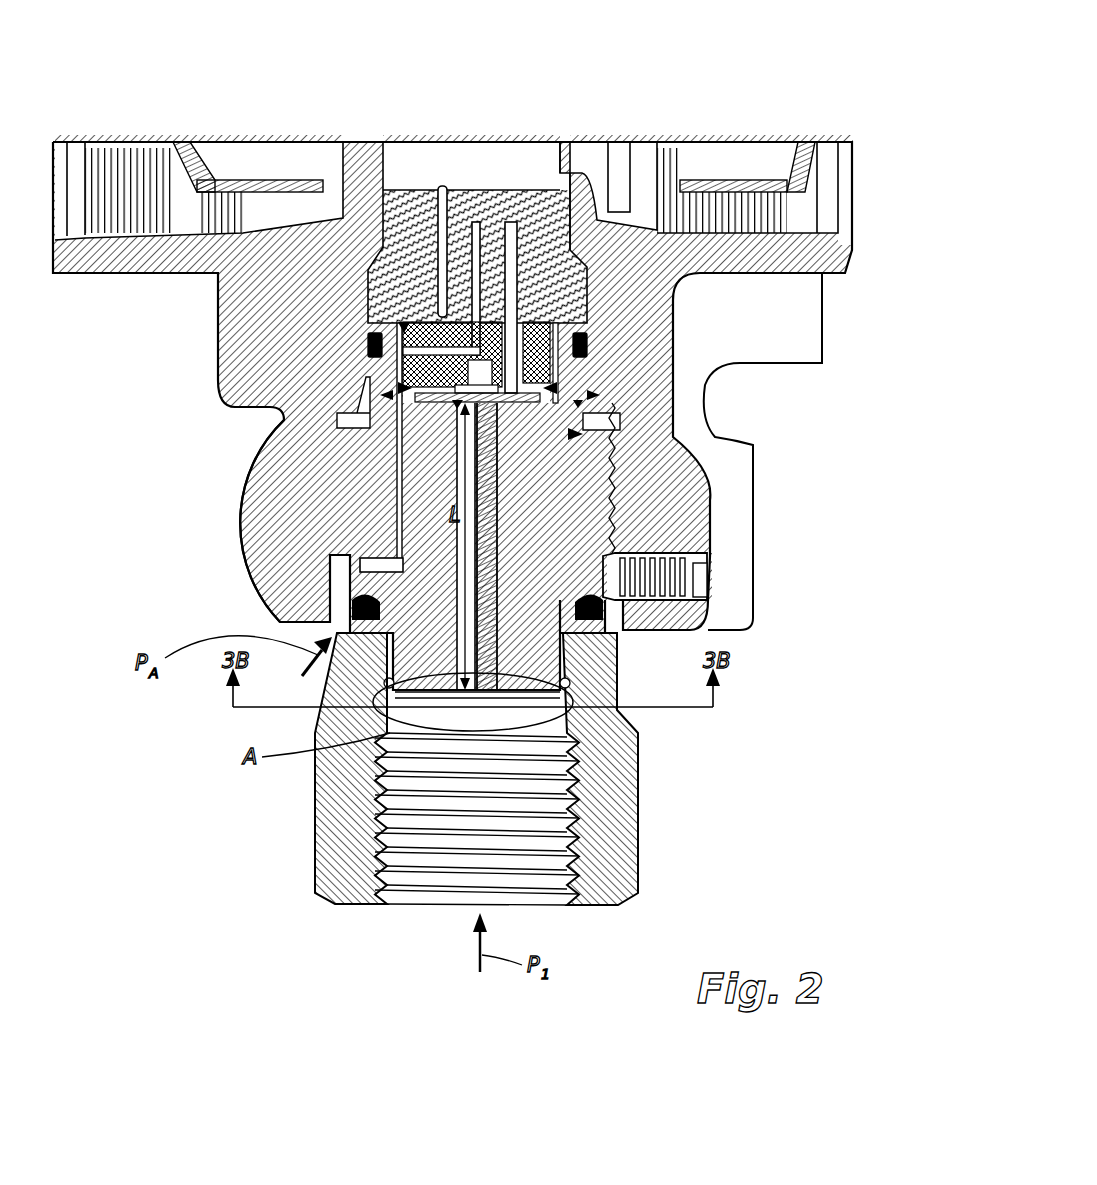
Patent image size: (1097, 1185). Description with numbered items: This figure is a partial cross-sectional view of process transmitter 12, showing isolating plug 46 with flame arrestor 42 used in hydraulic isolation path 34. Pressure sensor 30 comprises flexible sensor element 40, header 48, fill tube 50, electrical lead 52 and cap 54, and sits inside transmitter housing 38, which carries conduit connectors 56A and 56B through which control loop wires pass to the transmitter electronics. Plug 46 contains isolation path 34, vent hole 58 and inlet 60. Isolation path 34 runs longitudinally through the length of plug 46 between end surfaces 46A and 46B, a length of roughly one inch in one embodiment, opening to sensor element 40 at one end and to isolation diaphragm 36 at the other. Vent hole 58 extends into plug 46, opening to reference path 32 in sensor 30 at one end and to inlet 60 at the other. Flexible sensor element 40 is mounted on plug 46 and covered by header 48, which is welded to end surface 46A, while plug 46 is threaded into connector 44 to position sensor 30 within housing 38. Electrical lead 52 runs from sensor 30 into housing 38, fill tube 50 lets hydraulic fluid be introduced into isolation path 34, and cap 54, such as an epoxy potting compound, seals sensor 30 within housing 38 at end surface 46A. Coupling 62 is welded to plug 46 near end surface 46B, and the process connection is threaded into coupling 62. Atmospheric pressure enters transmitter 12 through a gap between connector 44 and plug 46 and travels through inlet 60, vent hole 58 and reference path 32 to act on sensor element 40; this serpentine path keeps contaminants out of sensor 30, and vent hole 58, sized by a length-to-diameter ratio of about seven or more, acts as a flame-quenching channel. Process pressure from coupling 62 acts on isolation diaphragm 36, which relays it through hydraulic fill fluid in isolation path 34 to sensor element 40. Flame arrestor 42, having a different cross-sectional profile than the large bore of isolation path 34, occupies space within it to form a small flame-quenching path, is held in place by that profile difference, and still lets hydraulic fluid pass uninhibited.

The process transmitter 12 is at (688, 108).
The pressure sensor 30 is at (349, 323).
The reference path 32 is at (404, 322).
The isolation path 34 is at (480, 547).
The isolation diaphragm 36 is at (630, 735).
The transmitter housing 38 is at (690, 388).
The flexible sensor element 40 is at (368, 347).
The flame arrestor 42 is at (500, 466).
The connector 44 is at (278, 575).
The isolating plug 46 is at (552, 525).
The end surface 46A is at (583, 432).
The end surface 46B is at (575, 650).
The header 48 is at (547, 322).
The fill tube 50 is at (604, 215).
The electrical lead 52 is at (410, 215).
The cap 54 is at (513, 268).
The conduit connector 56A is at (835, 192).
The conduit connector 56B is at (72, 193).
The vent hole 58 is at (395, 553).
The inlet 60 is at (345, 552).
The coupling 62 is at (345, 803).